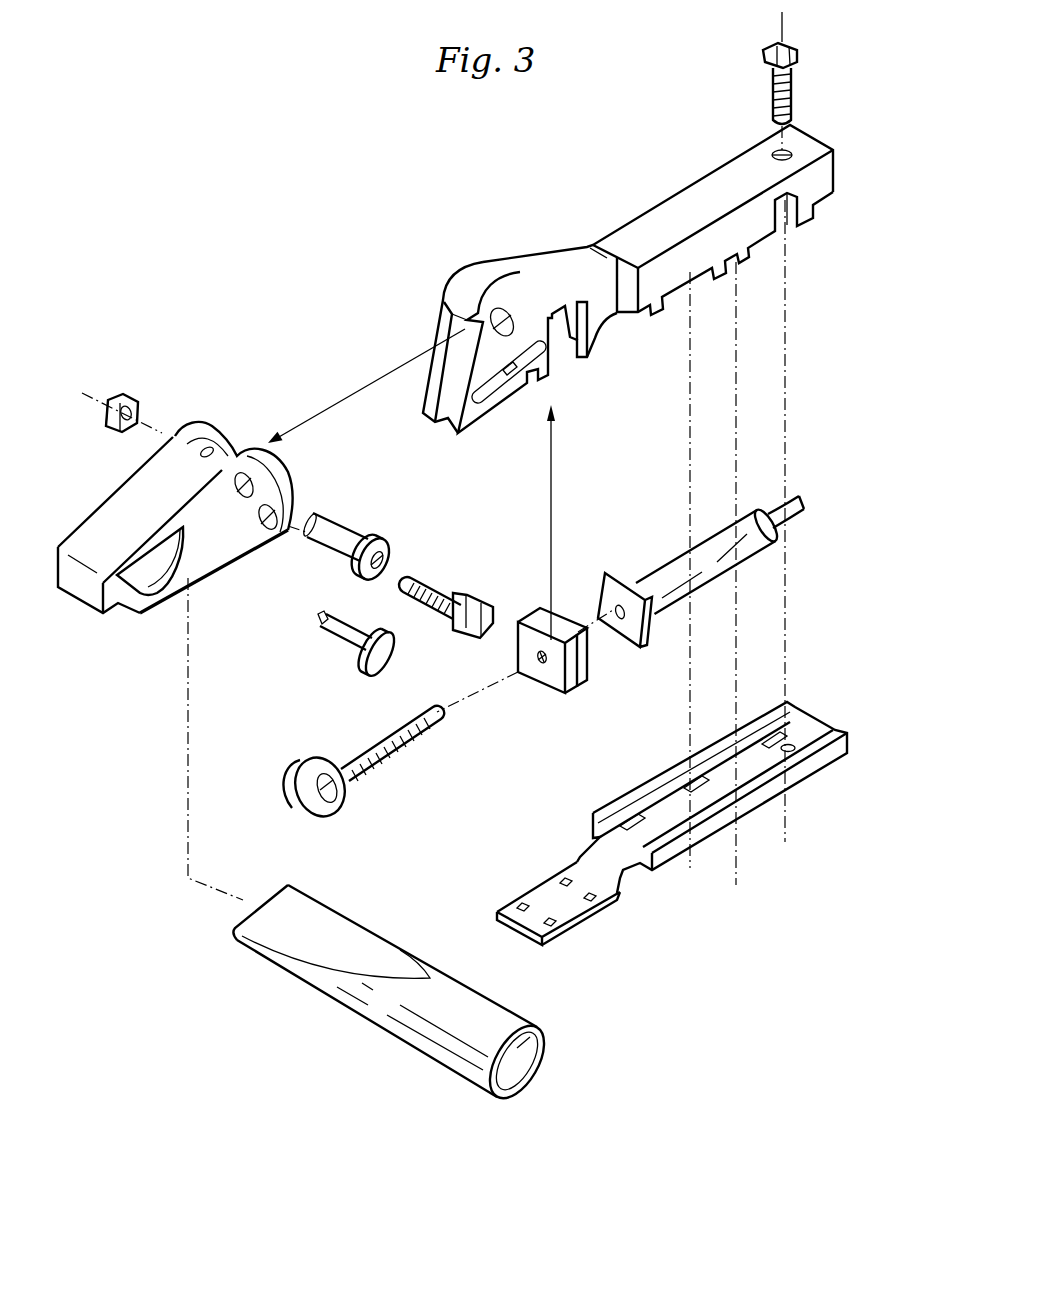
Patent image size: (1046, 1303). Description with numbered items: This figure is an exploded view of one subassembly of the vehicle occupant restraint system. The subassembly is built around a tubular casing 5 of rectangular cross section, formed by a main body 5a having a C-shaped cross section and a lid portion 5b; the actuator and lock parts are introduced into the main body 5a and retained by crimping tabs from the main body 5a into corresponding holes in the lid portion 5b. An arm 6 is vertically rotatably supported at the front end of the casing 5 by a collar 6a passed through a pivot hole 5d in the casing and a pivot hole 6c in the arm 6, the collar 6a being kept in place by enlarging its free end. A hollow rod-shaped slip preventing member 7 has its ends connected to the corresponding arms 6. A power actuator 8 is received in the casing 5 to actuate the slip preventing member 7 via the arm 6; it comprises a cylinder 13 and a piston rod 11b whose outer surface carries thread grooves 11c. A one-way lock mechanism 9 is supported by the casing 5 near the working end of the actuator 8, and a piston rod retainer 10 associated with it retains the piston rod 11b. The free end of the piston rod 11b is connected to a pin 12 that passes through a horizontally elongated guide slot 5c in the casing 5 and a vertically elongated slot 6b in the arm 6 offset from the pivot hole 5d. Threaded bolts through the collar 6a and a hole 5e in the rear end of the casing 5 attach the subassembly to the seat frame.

The tubular casing 5 is at (868, 337).
The main body 5a is at (822, 183).
The lid portion 5b is at (812, 725).
The guide slot 5c is at (537, 347).
The pivot hole 5d is at (512, 307).
The hole 5e is at (802, 138).
The arm 6 is at (115, 503).
The collar 6a is at (392, 548).
The vertically elongated slot 6b is at (283, 527).
The pivot hole 6c is at (255, 480).
The slip preventing member 7 is at (430, 1045).
The power actuator 8 is at (677, 528).
The one-way lock mechanism 9 is at (582, 677).
The piston rod retainer 10 is at (557, 680).
The piston rod 11b is at (342, 803).
The thread grooves 11c is at (407, 747).
The pin 12 is at (342, 648).
The cylinder 13 is at (668, 570).